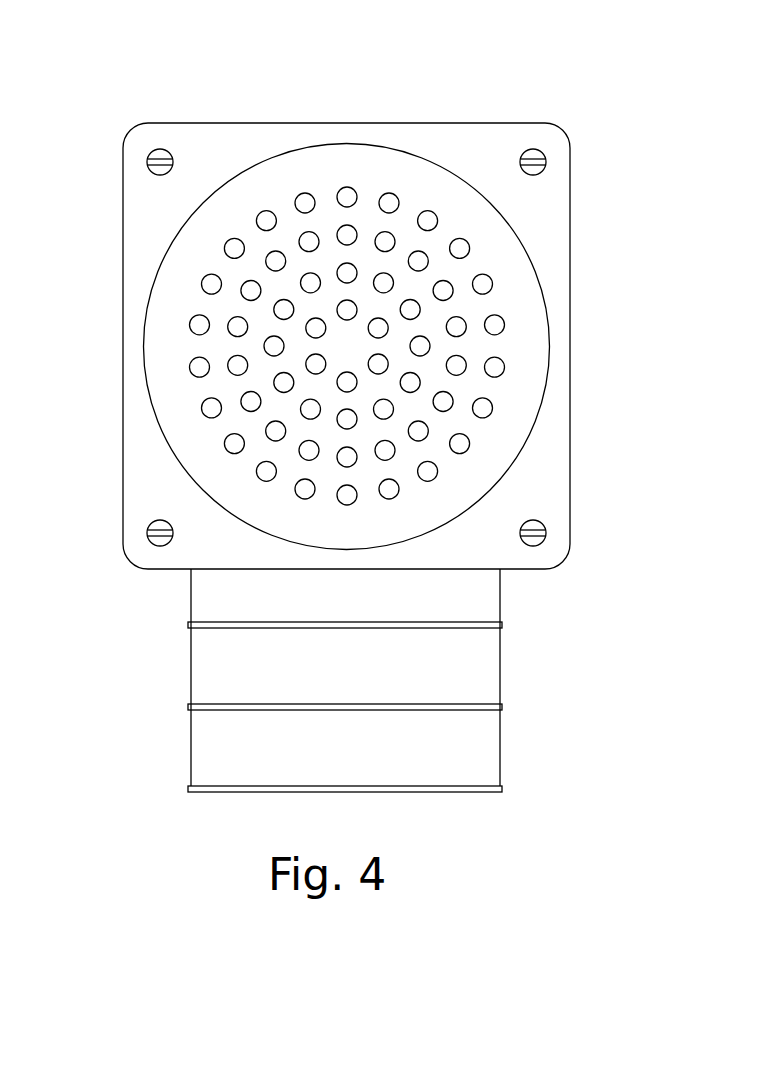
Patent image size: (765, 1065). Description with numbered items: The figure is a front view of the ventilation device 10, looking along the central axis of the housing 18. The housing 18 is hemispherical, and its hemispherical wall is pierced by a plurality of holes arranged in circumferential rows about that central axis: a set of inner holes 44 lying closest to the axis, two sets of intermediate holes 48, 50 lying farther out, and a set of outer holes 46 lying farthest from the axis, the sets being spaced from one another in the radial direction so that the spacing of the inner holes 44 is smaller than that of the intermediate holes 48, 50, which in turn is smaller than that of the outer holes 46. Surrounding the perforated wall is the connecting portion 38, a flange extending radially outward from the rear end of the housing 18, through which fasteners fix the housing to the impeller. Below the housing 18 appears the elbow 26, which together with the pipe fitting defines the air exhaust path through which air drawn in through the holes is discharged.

The nozzle assembly 10 is at (562, 106).
The housing 18 is at (198, 461).
The elbow 26 is at (212, 660).
The connecting portion 38 is at (253, 137).
The inner holes 44 is at (313, 327).
The outer holes 46 is at (347, 187).
The intermediate holes 48 is at (282, 384).
The intermediate holes 50 is at (236, 366).